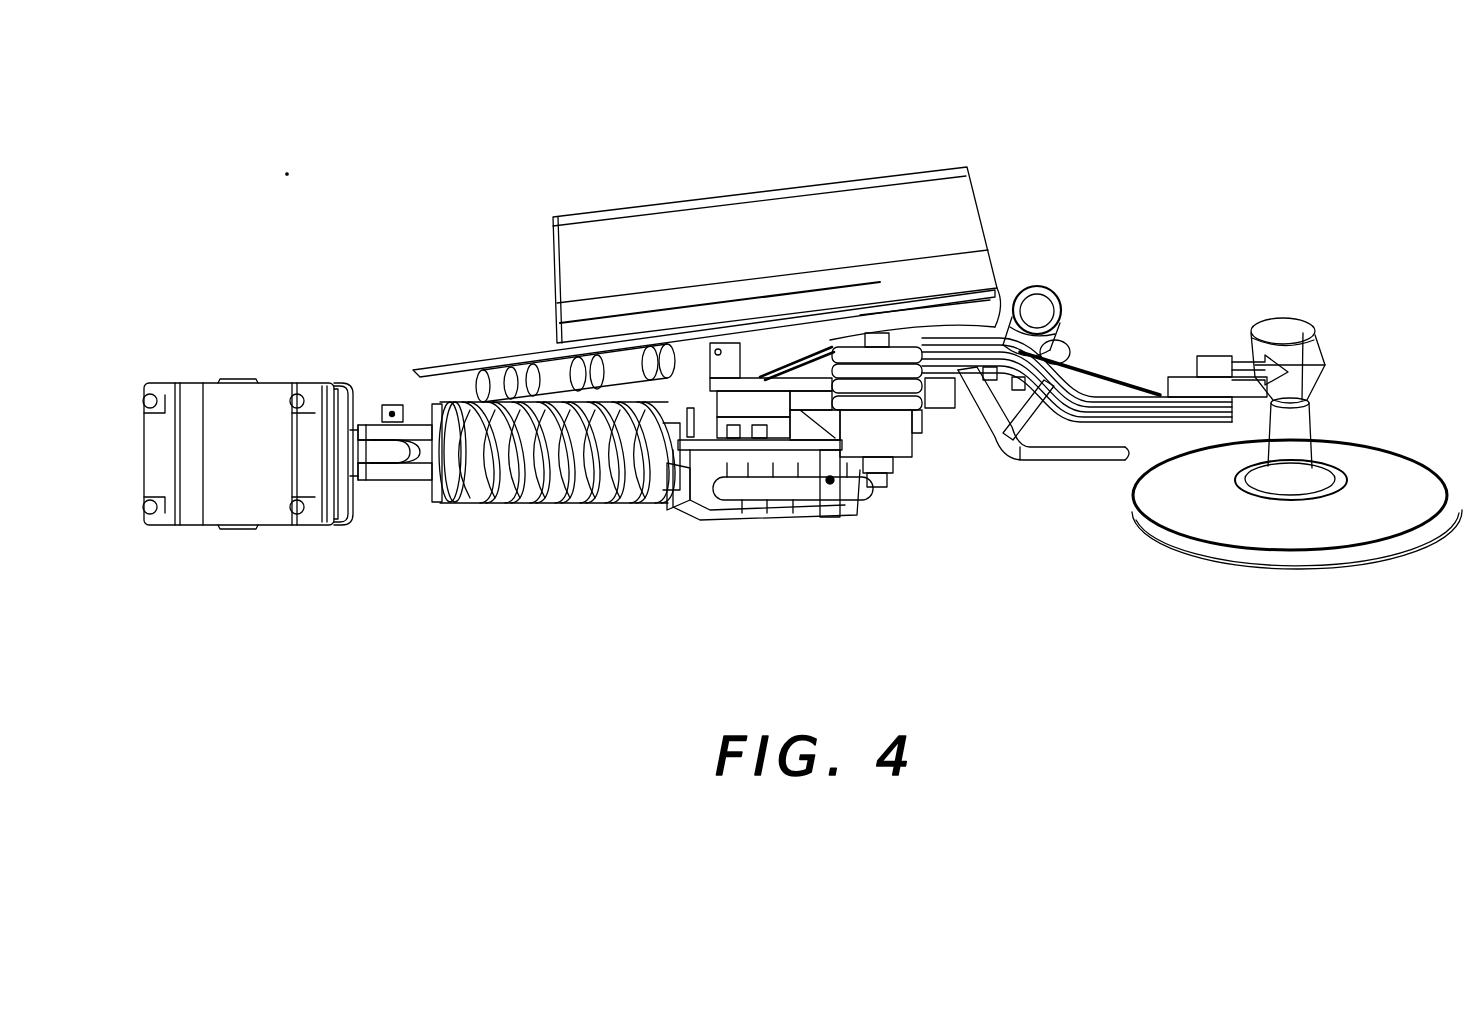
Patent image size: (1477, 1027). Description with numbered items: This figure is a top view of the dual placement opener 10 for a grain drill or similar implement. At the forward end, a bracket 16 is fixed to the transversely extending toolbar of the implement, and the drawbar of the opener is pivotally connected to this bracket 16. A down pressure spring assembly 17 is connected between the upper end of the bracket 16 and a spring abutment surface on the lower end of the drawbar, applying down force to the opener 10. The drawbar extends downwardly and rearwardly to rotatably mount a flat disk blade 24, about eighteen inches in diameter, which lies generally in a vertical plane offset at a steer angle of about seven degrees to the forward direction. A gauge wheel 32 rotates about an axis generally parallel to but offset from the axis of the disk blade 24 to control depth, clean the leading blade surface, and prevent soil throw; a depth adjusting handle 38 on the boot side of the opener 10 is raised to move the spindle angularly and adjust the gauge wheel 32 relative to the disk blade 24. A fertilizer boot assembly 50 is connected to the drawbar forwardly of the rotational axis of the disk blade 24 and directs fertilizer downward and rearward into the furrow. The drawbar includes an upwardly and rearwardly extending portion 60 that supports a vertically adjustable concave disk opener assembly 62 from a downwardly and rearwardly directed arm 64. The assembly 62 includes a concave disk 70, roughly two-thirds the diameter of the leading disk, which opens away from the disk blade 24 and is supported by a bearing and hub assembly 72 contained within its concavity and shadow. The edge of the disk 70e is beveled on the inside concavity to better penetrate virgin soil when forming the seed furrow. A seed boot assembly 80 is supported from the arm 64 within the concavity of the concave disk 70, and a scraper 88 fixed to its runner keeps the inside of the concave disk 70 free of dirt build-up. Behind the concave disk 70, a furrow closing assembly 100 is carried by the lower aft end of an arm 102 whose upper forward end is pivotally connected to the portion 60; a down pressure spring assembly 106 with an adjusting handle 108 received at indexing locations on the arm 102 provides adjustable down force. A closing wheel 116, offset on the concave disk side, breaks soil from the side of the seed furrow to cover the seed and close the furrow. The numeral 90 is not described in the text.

The dual placement opener 10 is at (1133, 115).
The bracket 16 is at (265, 388).
The down pressure spring assembly 17 is at (497, 506).
The disk blade 24 is at (463, 360).
The gauge wheel 32 is at (705, 215).
The depth adjusting handle 38 is at (833, 500).
The fertilizer boot assembly 50 is at (581, 344).
The upwardly and rearwardly extending portion 60 is at (772, 475).
The concave disk opener assembly 62 is at (1003, 303).
The arm 64 is at (767, 380).
The concave disk 70 is at (994, 312).
The edge of the disk 70e is at (1067, 360).
The bearing and hub assembly 72 is at (950, 333).
The seed boot assembly 80 is at (1043, 354).
The scraper 88 is at (817, 363).
The ring 90 is at (1057, 293).
The furrow closing assembly 100 is at (1192, 343).
The arm 102 is at (1157, 423).
The down pressure spring assembly 106 is at (933, 426).
The adjusting handle 108 is at (1073, 462).
The closing wheel 116 is at (1283, 540).